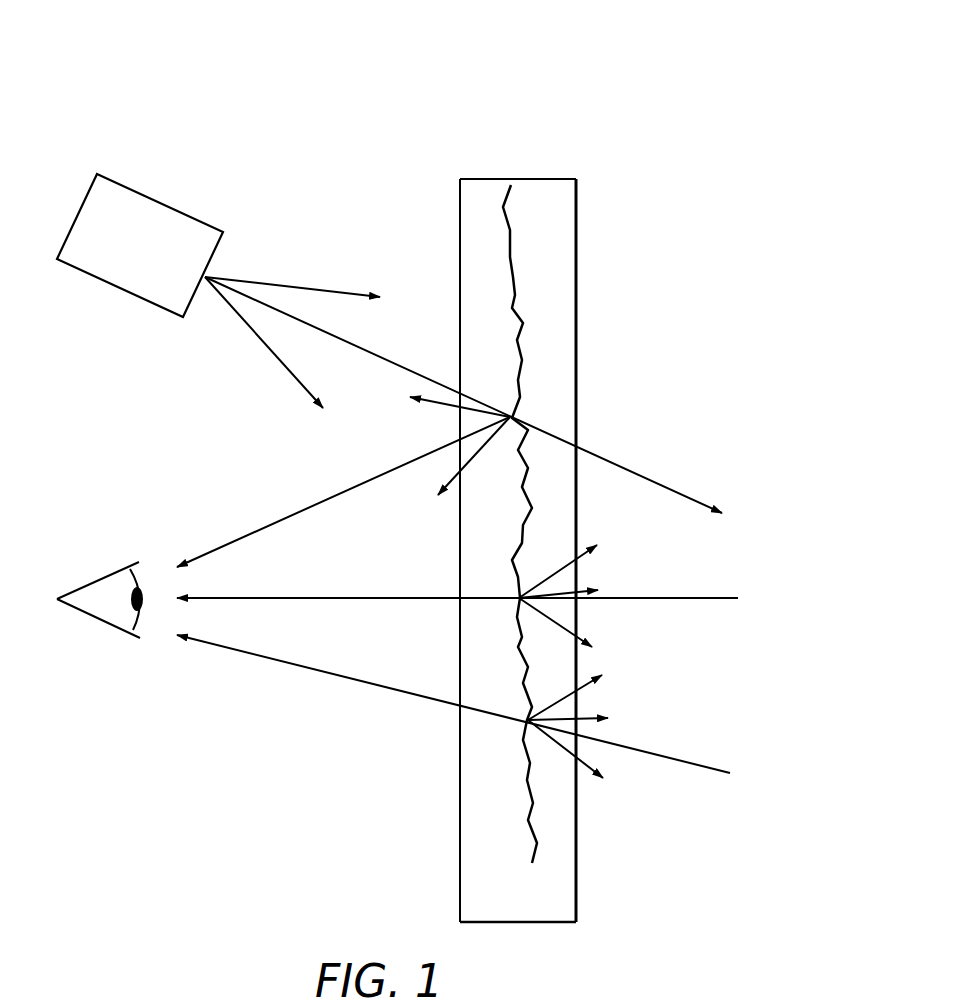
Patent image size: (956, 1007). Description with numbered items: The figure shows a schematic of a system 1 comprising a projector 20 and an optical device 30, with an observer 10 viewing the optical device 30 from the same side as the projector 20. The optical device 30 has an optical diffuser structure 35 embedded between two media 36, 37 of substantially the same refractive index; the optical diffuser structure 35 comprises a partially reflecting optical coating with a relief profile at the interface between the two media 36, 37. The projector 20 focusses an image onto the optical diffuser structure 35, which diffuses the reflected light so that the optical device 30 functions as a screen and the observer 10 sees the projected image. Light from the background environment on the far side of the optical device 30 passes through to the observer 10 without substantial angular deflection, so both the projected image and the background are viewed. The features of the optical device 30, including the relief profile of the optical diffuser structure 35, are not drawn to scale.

The system 1 is at (612, 64).
The observer 10 is at (84, 586).
The projector 20 is at (95, 181).
The optical device 30 is at (589, 192).
The optical diffuser structure 35 is at (523, 322).
The medium 36 is at (576, 857).
The medium 37 is at (460, 857).